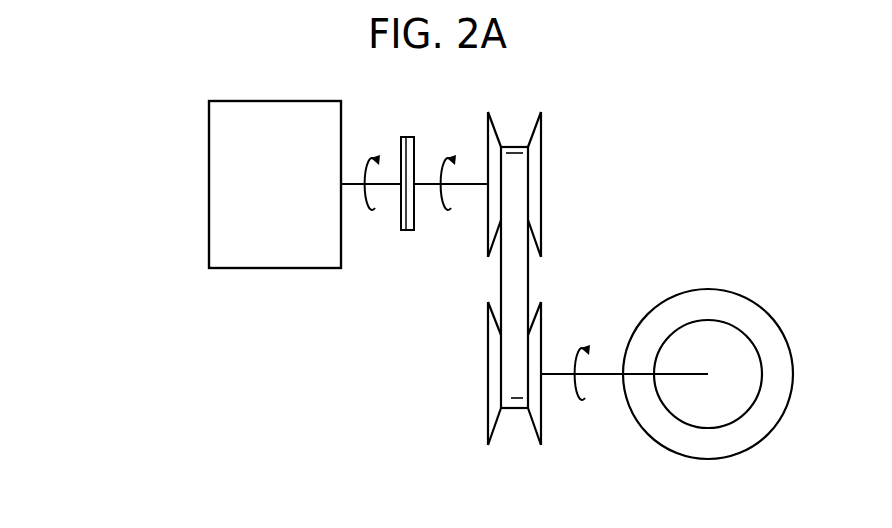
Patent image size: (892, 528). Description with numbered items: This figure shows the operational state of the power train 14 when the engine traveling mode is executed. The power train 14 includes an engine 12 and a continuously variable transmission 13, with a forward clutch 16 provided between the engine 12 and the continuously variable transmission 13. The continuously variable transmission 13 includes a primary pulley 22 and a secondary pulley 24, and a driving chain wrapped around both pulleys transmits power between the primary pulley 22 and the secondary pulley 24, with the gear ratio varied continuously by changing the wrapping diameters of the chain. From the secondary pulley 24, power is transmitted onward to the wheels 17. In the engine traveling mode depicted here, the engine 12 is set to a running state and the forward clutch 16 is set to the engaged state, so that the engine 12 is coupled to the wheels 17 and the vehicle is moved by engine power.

The engine 12 is at (168, 145).
The continuously variable transmission 13 is at (496, 278).
The power train 14 is at (209, 217).
The forward clutch 16 is at (404, 242).
The wheels 17 is at (727, 298).
The primary pulley 22 is at (541, 137).
The secondary pulley 24 is at (543, 327).